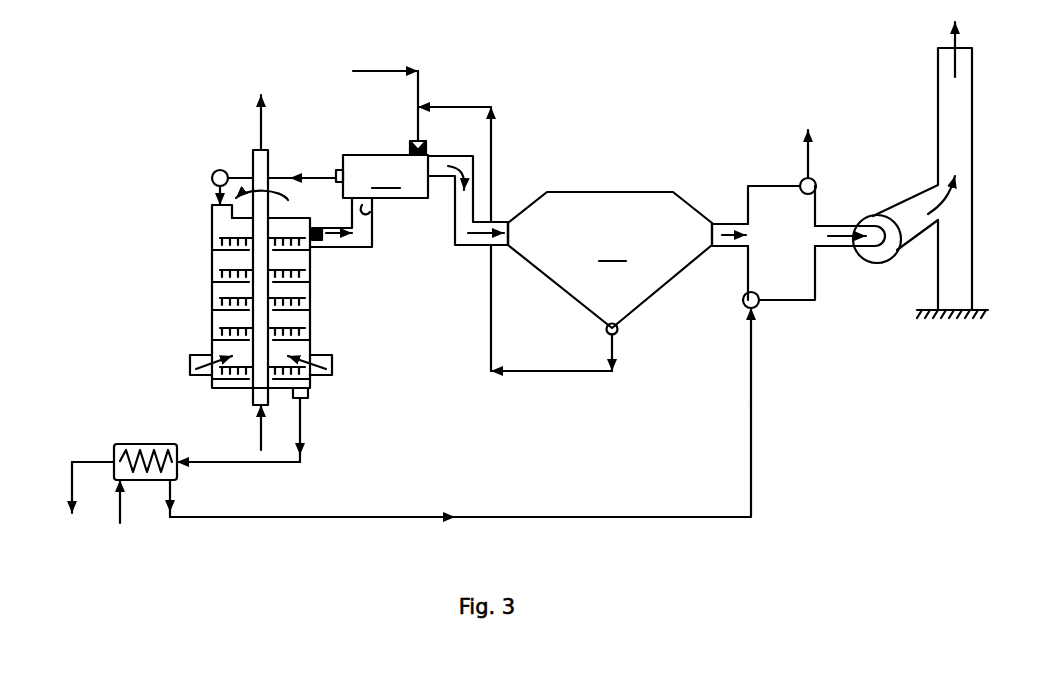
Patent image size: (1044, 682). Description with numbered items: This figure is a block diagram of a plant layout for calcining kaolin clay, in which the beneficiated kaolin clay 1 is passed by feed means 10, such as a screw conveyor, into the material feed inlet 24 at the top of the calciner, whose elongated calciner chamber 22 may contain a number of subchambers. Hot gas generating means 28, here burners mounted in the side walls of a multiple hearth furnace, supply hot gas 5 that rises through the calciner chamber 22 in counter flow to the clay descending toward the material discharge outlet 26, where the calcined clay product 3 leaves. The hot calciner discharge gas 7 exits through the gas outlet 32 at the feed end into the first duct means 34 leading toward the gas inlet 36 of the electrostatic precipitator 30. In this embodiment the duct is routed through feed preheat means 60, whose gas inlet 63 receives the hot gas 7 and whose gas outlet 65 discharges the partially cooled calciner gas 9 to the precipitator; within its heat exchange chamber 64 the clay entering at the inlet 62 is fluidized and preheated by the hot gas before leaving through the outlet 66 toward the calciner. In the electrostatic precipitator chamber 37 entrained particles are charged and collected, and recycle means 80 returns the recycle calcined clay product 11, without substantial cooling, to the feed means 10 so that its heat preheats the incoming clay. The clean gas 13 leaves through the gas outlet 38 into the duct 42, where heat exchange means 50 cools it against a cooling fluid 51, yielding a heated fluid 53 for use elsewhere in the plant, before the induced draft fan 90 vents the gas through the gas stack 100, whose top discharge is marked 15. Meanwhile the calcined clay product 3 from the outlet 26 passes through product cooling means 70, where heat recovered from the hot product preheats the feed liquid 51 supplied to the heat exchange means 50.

The beneficiated kaolin clay 1 is at (386, 71).
The calcined clay product 3 is at (305, 432).
The hot gas 5 is at (332, 373).
The hot calciner discharge gas 7 is at (326, 247).
The partially cooled calciner gas 9 is at (471, 245).
The feed means 10 is at (220, 170).
The recycle calcined clay product 11 is at (491, 128).
The clean gas 13 is at (740, 224).
The stack outlet 15 is at (958, 42).
The calciner chamber 22 is at (298, 290).
The material feed inlet 24 is at (198, 217).
The material discharge outlet 26 is at (308, 396).
The hot gas generating means 28 is at (196, 355).
The electrostatic precipitator 30 is at (620, 192).
The gas outlet 32 is at (320, 228).
The first duct means 34 is at (372, 243).
The gas inlet 36 is at (512, 233).
The electrostatic precipitator chamber 37 is at (611, 249).
The gas outlet 38 is at (710, 233).
The duct 42 is at (836, 247).
The heat exchange means 50 is at (786, 186).
The cooling fluid 51 is at (120, 518).
The heated fluid 53 is at (811, 158).
The feed preheat means 60 is at (353, 155).
The inlet 62 is at (412, 142).
The gas inlet 63 is at (370, 210).
The heat exchange chamber 64 is at (385, 176).
The gas outlet 65 is at (446, 156).
The outlet 66 is at (340, 170).
The product cooling means 70 is at (158, 444).
The recycle means 80 is at (618, 329).
The induced draft fan 90 is at (870, 215).
The gas stack 100 is at (972, 145).